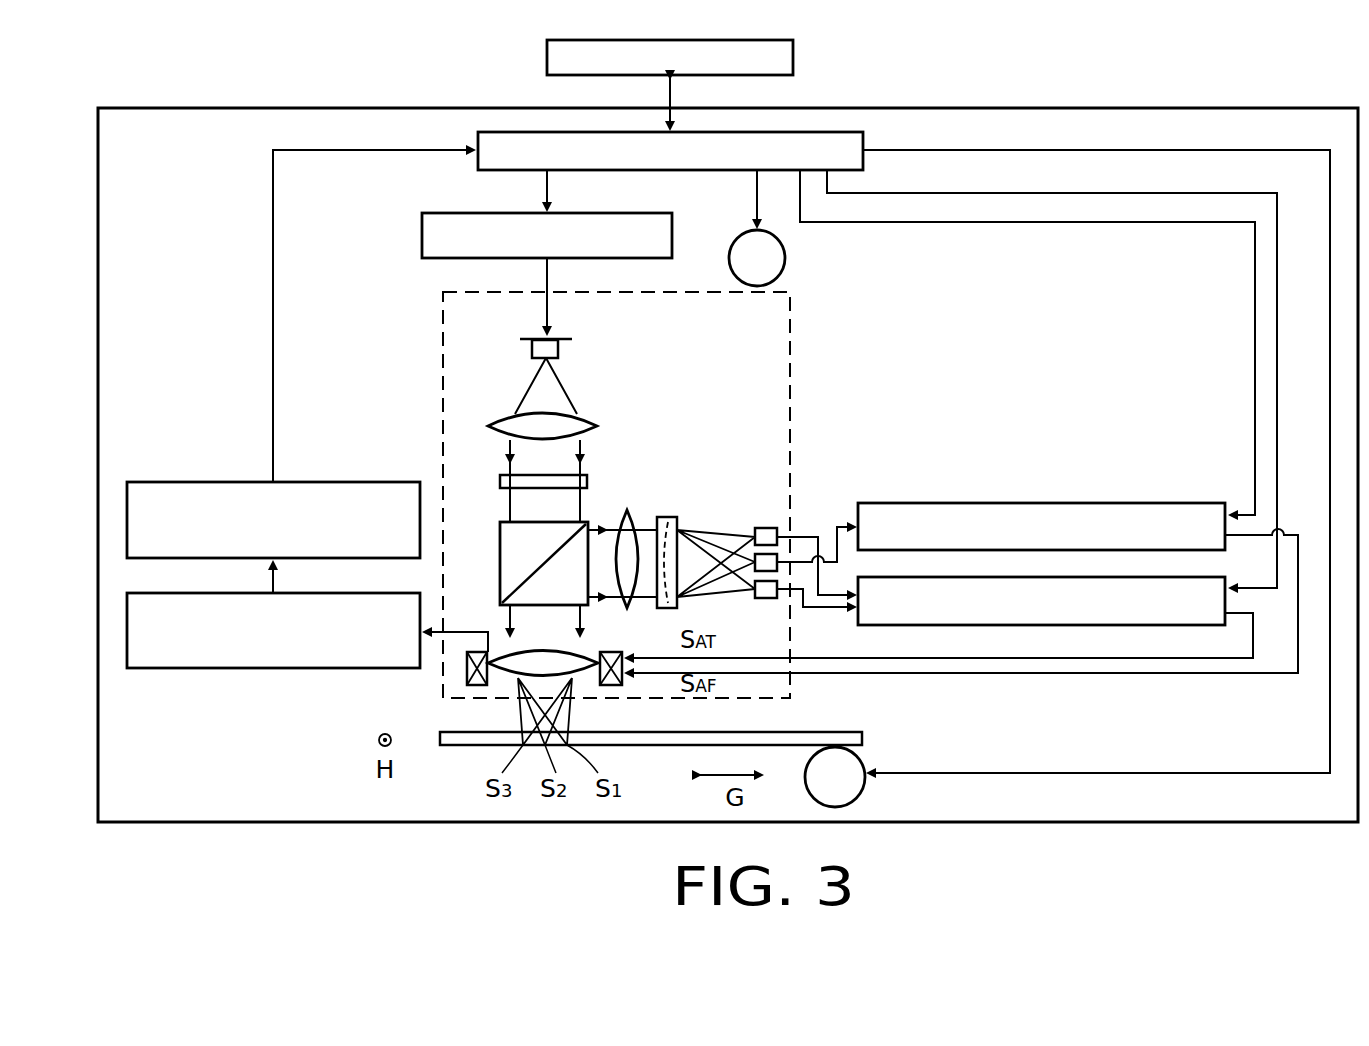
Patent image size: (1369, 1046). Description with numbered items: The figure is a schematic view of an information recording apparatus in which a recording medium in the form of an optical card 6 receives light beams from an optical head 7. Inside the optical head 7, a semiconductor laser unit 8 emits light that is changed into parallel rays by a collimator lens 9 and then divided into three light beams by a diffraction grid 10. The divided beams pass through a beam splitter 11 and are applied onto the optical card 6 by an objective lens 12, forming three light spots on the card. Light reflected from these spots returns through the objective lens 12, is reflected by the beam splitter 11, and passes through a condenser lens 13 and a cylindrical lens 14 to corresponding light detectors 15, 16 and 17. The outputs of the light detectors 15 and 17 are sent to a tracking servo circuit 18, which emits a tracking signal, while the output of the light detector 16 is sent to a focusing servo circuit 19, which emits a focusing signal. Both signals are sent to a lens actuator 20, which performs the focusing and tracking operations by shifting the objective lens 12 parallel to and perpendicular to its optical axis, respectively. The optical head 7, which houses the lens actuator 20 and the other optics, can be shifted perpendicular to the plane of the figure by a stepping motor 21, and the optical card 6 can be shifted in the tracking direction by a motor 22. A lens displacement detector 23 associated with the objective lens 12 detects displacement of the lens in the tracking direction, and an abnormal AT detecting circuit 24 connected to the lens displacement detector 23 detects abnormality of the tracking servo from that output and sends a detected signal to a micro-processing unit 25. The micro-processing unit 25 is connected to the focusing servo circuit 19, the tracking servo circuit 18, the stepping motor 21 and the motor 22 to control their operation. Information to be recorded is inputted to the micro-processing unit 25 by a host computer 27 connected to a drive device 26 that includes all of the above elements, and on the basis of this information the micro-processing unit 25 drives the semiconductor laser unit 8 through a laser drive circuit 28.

The optical card 6 is at (815, 731).
The optical head 7 is at (440, 372).
The semiconductor laser unit 8 is at (565, 345).
The collimator lens 9 is at (580, 418).
The diffraction grid 10 is at (590, 480).
The beam splitter 11 is at (500, 530).
The objective lens 12 is at (592, 655).
The condenser lens 13 is at (632, 508).
The cylindrical lens 14 is at (678, 516).
The light detector 15 is at (765, 527).
The light detector 16 is at (780, 560).
The light detector 17 is at (767, 599).
The tracking servo circuit 18 is at (1148, 626).
The focusing servo circuit 19 is at (1150, 502).
The lens actuator 20 is at (612, 690).
The stepping motor 21 is at (786, 260).
The motor 22 is at (866, 790).
The lens displacement detector 23 is at (336, 593).
The abnormal AT detecting circuit 24 is at (355, 481).
The micro-processing unit (MPU) 25 is at (863, 130).
The drive device 26 is at (1256, 106).
The host computer 27 is at (795, 57).
The laser drive circuit 28 is at (660, 213).